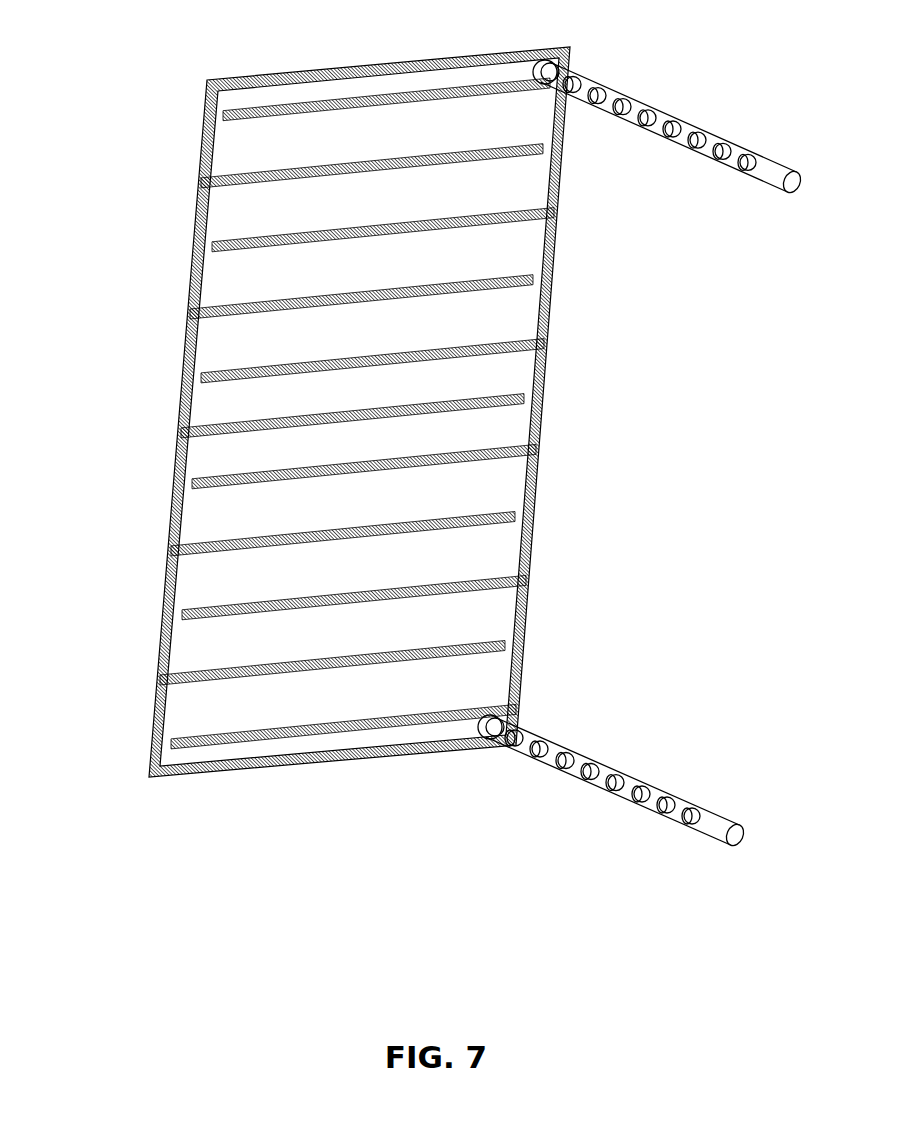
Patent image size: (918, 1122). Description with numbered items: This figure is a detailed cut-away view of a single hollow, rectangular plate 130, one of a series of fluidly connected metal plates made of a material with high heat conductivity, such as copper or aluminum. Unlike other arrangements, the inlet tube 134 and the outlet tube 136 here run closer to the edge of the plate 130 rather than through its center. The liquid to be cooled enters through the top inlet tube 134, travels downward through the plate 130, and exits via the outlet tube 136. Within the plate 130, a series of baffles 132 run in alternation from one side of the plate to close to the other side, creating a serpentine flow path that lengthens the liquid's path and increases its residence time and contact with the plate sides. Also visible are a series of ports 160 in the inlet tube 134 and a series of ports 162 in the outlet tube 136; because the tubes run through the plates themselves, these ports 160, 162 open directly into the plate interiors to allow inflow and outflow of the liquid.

The plate 130 is at (408, 60).
The baffles 132 is at (238, 113).
The inlet tube 134 is at (777, 157).
The outlet tube 136 is at (715, 808).
The ports 160 is at (571, 91).
The ports 162 is at (690, 822).